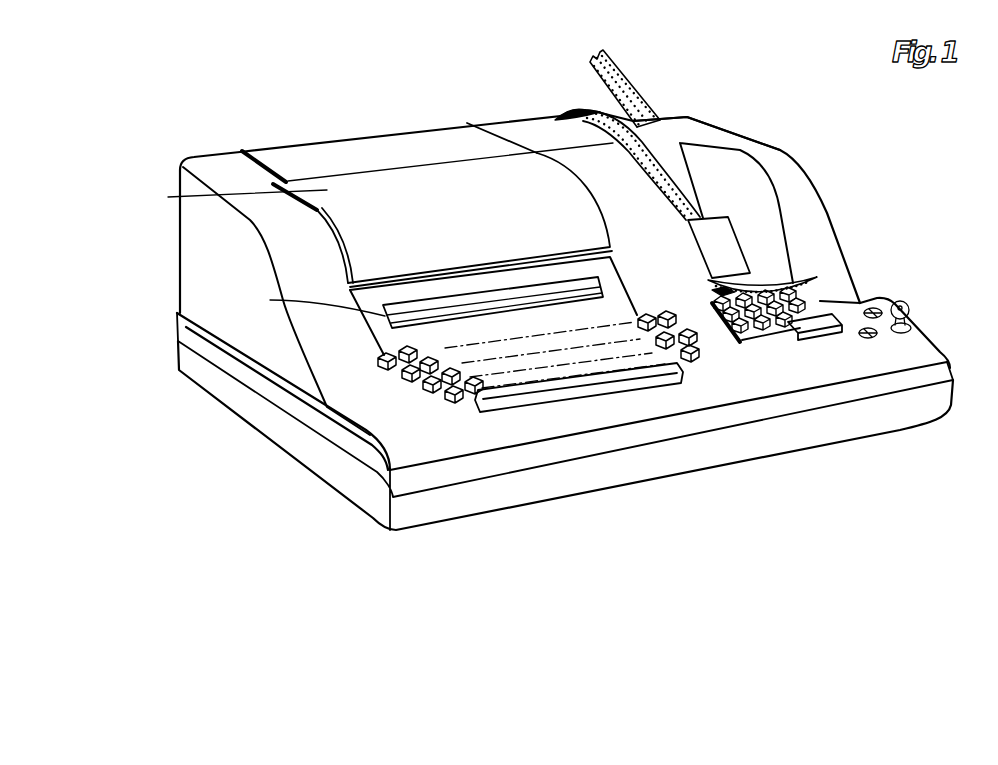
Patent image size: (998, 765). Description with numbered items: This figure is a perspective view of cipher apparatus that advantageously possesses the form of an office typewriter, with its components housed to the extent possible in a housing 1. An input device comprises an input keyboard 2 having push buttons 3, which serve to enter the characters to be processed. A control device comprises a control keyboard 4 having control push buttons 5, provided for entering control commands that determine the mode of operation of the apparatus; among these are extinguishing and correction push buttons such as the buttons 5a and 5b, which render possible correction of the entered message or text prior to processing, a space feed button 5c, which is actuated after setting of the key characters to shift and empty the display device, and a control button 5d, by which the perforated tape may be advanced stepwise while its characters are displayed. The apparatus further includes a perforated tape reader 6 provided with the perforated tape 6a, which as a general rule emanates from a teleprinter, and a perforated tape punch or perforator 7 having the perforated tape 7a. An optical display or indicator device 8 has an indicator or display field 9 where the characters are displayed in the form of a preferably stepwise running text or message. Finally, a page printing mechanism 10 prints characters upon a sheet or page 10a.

The housing 1 is at (950, 424).
The input keyboard 2 is at (460, 416).
The push buttons 3 is at (402, 381).
The control keyboard 4 is at (783, 348).
The control push buttons 5 is at (812, 308).
The extinguishing and correction push button 5a is at (716, 296).
The correction button 5b is at (713, 293).
The space feed button 5c is at (822, 330).
The control button 5d is at (731, 318).
The perforated tape reader 6 is at (721, 248).
The perforated tape 6a is at (582, 110).
The perforated tape punch or perforator 7 is at (670, 112).
The perforated tape 7a is at (616, 74).
The optical display or indicator device 8 is at (378, 307).
The indicator or display field 9 is at (397, 317).
The page printing mechanism 10 is at (314, 212).
The sheet or page 10a is at (270, 160).